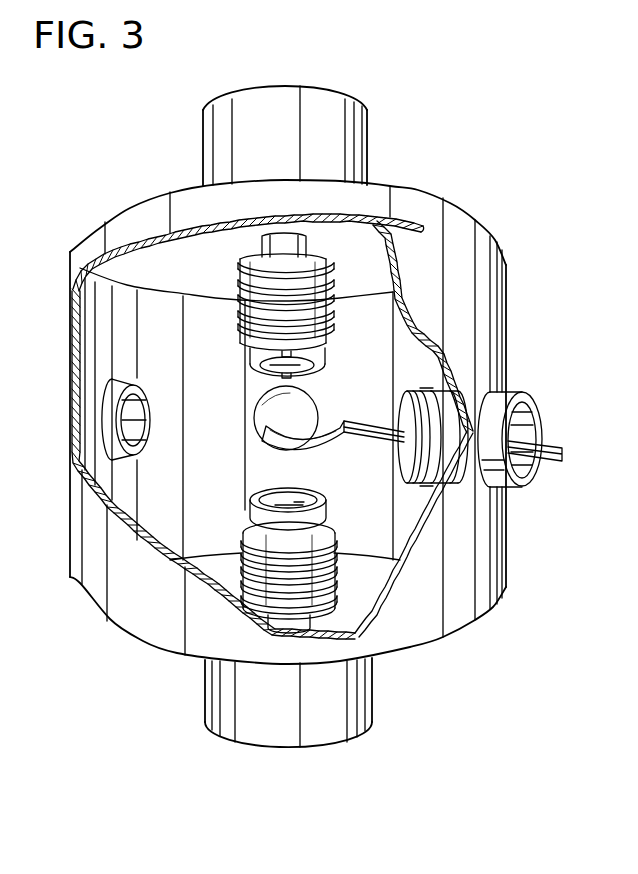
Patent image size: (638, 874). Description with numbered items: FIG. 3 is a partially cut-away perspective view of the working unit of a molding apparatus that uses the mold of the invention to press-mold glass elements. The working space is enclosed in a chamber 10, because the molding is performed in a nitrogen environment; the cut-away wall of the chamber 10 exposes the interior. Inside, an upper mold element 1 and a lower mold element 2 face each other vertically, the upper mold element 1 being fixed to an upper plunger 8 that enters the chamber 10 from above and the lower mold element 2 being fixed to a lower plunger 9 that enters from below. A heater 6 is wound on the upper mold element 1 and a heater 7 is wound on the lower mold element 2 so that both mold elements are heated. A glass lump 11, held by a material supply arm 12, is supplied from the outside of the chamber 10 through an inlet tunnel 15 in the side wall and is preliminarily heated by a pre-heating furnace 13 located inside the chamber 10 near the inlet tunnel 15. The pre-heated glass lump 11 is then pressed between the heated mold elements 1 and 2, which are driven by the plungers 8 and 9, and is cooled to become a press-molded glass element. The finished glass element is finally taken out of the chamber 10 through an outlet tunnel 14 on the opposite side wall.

The upper mold element 1 is at (320, 373).
The lower mold element 2 is at (326, 507).
The heater 6 is at (334, 272).
The heater 7 is at (329, 567).
The upper plunger 8 is at (356, 141).
The lower plunger 9 is at (356, 705).
The chamber 10 is at (142, 625).
The glass lump 11 is at (264, 402).
The material supply arm 12 is at (313, 440).
The pre-heating furnace 13 is at (432, 390).
The outlet tunnel 14 is at (122, 380).
The inlet tunnel 15 is at (512, 394).